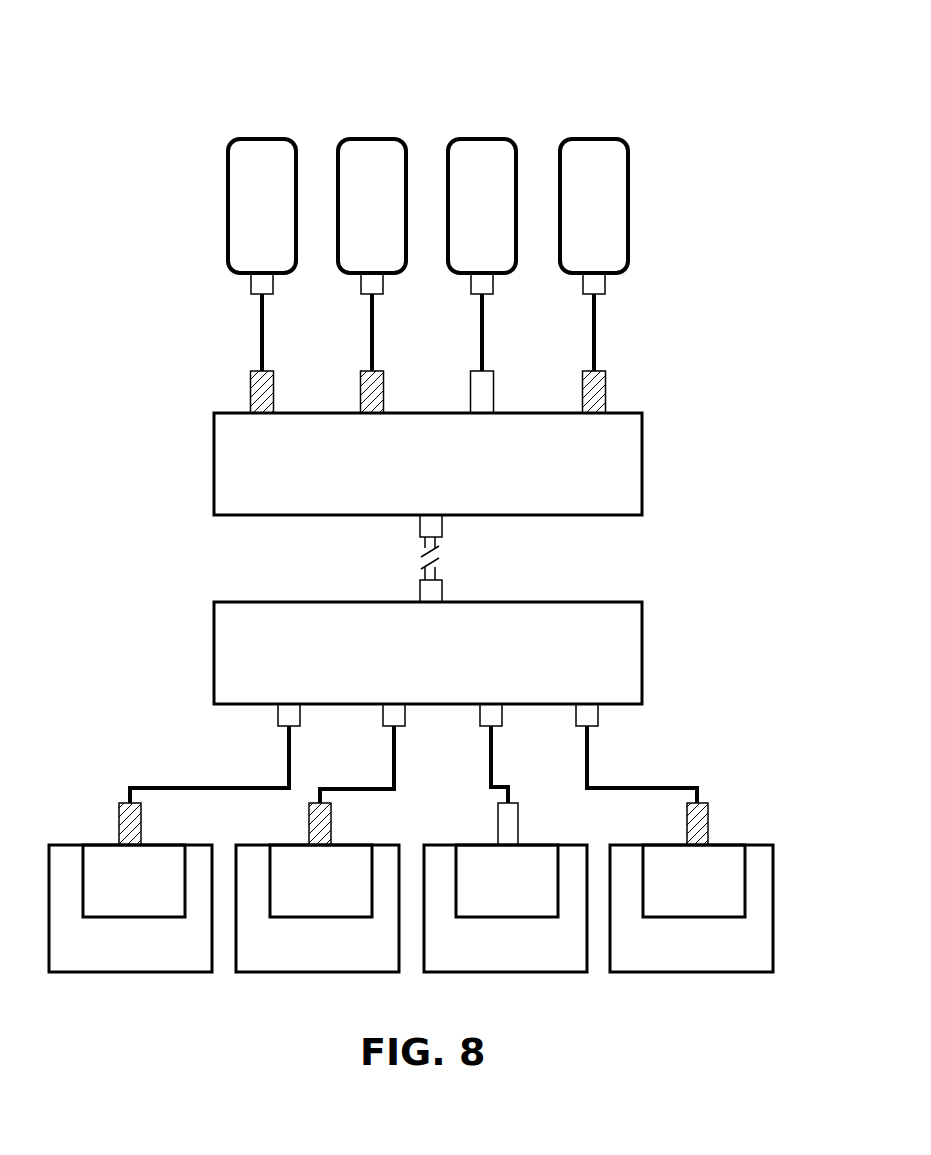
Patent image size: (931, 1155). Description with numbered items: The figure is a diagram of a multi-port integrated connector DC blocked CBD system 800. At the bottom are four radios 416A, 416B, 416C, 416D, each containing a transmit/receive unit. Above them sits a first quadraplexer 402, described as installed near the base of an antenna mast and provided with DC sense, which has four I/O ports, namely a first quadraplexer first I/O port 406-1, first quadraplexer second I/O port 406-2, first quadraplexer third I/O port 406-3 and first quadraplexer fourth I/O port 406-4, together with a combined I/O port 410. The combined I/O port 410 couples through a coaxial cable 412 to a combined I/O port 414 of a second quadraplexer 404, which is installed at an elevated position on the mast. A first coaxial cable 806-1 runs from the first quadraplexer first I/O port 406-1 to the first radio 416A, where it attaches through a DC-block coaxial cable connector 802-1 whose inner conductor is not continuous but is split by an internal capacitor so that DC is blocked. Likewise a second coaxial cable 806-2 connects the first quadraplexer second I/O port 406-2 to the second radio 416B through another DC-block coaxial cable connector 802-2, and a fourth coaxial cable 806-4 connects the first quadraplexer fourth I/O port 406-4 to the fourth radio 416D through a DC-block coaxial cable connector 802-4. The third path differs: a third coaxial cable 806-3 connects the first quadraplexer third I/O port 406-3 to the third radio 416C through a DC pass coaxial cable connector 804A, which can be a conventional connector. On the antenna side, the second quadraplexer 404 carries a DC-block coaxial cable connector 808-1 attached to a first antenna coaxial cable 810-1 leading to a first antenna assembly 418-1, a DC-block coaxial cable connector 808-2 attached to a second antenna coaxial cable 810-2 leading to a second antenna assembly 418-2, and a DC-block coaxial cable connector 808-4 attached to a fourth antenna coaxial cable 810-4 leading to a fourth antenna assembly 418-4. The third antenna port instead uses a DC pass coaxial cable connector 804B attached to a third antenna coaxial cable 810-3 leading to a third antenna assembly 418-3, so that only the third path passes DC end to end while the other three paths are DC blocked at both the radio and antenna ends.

The system 800 is at (762, 71).
The first antenna assembly 418-1 is at (277, 140).
The second antenna assembly 418-2 is at (392, 140).
The third antenna assembly 418-3 is at (492, 138).
The fourth antenna assembly 418-4 is at (608, 138).
The first antenna coaxial cable 810-1 is at (260, 327).
The second antenna coaxial cable 810-2 is at (371, 335).
The third antenna coaxial cable 810-3 is at (481, 333).
The fourth antenna coaxial cable 810-4 is at (593, 342).
The DC-block coaxial cable connector 808-1 is at (249, 397).
The DC-block coaxial cable connector 808-2 is at (361, 395).
The DC pass coaxial cable connector 804B is at (471, 395).
The DC-block coaxial cable connector 808-4 is at (606, 392).
The second quadraplexer 404 is at (643, 452).
The combined I/O port 414 is at (418, 532).
The coaxial cable 412 is at (447, 563).
The combined I/O port 410 is at (418, 597).
The first quadraplexer 402 is at (613, 601).
The first quadraplexer first I/O port 406-1 is at (277, 728).
The first quadraplexer second I/O port 406-2 is at (389, 729).
The first quadraplexer third I/O port 406-3 is at (481, 729).
The first quadraplexer fourth I/O port 406-4 is at (598, 722).
The first coaxial cable 806-1 is at (163, 787).
The second coaxial cable 806-2 is at (360, 790).
The third coaxial cable 806-3 is at (492, 747).
The fourth coaxial cable 806-4 is at (637, 788).
The DC-block coaxial cable connector 802-1 is at (120, 815).
The DC-block coaxial cable connector 802-2 is at (310, 837).
The DC pass coaxial cable connector 804A is at (518, 837).
The DC-block coaxial cable connector 802-4 is at (708, 828).
The first radio 416A is at (110, 957).
The second radio 416B is at (297, 957).
The third radio 416C is at (483, 957).
The fourth radio 416D is at (670, 957).